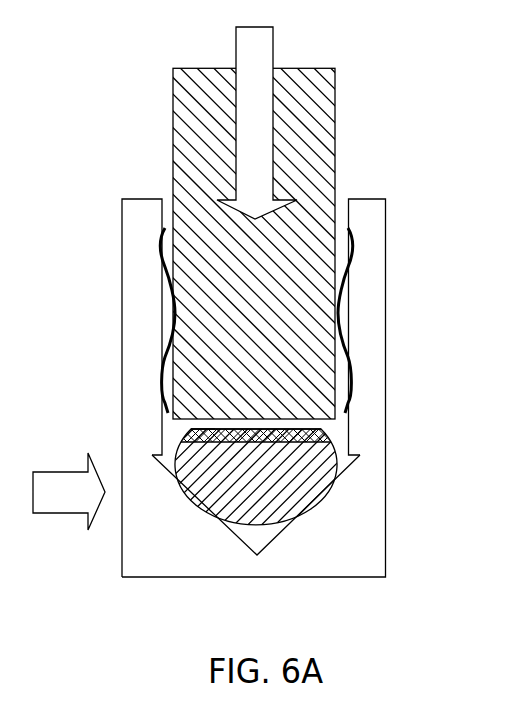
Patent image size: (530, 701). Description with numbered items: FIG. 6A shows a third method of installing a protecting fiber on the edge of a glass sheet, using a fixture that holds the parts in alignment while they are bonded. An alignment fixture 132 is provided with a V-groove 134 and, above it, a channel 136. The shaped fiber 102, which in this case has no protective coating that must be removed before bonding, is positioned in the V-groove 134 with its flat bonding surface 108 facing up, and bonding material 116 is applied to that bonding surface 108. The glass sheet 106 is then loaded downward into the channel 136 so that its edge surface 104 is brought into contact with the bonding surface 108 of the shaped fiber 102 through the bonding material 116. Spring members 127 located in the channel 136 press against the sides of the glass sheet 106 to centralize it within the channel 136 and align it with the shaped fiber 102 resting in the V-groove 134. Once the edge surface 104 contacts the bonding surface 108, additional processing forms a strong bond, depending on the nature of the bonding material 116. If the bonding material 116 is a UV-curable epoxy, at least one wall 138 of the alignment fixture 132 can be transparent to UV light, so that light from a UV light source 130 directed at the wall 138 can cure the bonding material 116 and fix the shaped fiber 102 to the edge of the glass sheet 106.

The shaped fiber 102 is at (313, 468).
The edge surface of glass sheet 104 is at (326, 414).
The glass sheet 106 is at (335, 102).
The bonding surface of the protecting fiber 108 is at (285, 443).
The bonding material 116 is at (215, 438).
The spring 127 is at (350, 257).
The UV light source 130 is at (69, 491).
The alignment fixture 132 is at (385, 322).
The V-groove 134 is at (248, 532).
The channel 136 is at (167, 208).
The wall 138 is at (135, 378).